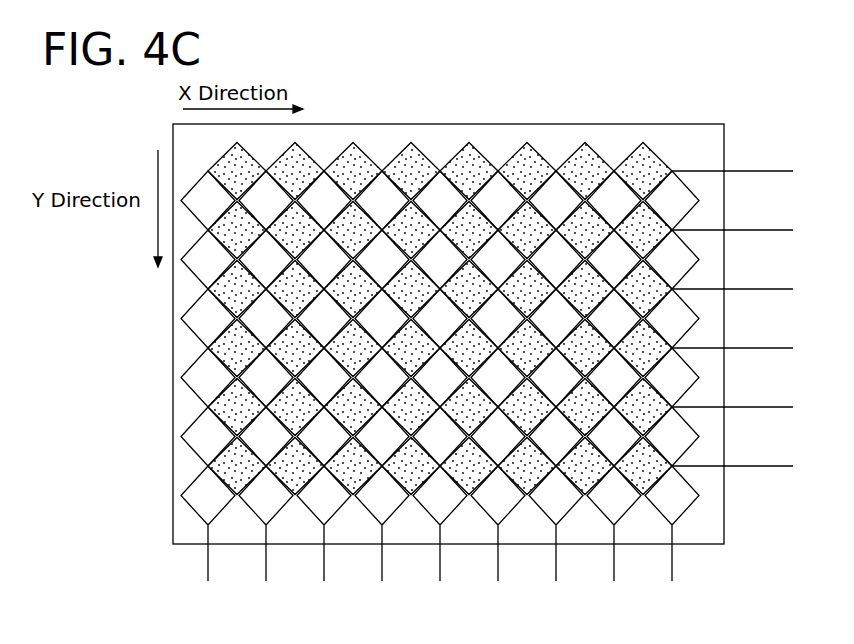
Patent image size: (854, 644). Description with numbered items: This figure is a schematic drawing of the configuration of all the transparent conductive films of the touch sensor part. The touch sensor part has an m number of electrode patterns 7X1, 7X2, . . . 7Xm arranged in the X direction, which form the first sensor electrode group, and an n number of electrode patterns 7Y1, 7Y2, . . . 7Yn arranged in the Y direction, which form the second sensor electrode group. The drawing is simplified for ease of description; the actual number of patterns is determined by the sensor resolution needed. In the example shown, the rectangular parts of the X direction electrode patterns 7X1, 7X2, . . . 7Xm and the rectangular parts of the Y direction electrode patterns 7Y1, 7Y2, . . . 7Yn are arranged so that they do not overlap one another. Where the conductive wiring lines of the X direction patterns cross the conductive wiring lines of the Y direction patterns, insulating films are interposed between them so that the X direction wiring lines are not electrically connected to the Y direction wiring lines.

The X direction electrode pattern 7X1 is at (208, 563).
The X direction electrode pattern 7X2 is at (266, 563).
The X direction electrode pattern 7Xm is at (672, 560).
The Y direction electrode pattern 7Y1 is at (743, 167).
The Y direction electrode pattern 7Y2 is at (743, 226).
The Y direction electrode pattern 7Yn is at (743, 462).